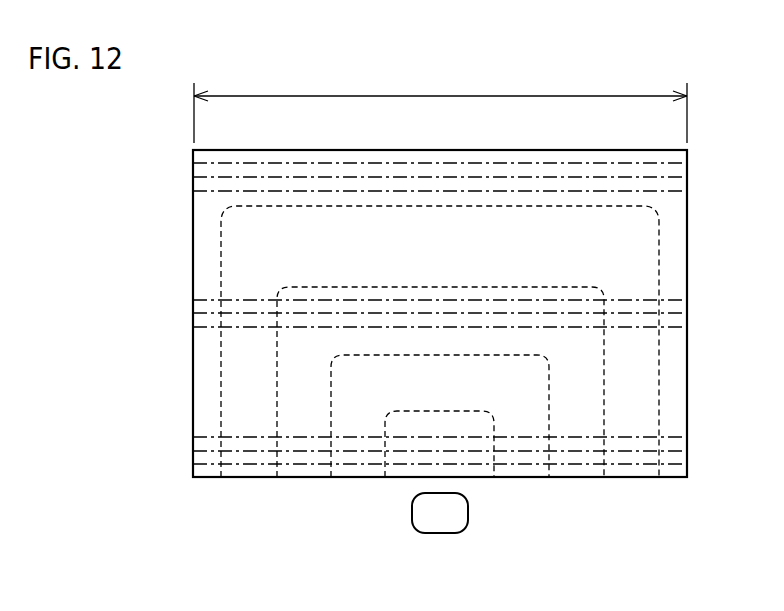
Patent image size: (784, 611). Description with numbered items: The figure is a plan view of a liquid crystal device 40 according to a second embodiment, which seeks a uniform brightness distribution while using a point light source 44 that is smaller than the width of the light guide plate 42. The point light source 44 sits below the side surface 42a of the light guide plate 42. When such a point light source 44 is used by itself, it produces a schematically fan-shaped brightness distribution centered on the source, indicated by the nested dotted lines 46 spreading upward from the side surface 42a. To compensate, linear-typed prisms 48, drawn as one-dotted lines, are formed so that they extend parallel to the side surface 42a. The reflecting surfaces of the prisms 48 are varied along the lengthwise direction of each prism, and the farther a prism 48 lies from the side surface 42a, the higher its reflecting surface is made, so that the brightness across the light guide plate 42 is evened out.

The liquid crystal device 40 is at (458, 43).
The light guide plate 42 is at (193, 248).
The side surface 42a is at (577, 480).
The point light source 44 is at (440, 534).
The dotted lines 46 is at (277, 384).
The prisms 48 is at (662, 195).